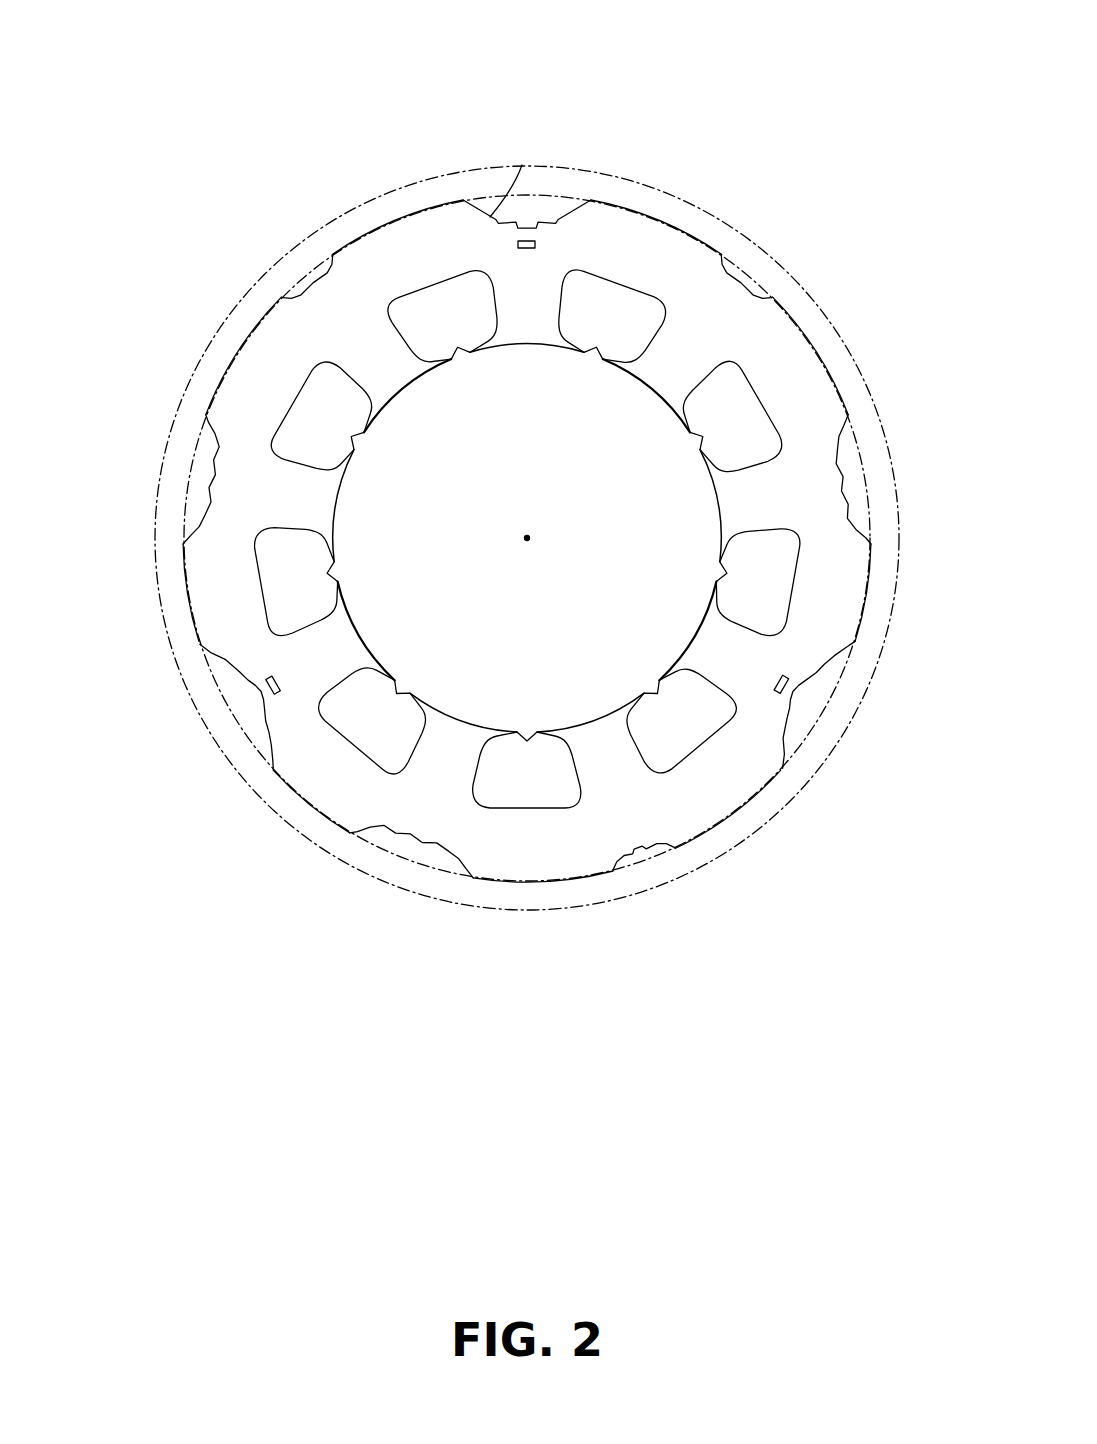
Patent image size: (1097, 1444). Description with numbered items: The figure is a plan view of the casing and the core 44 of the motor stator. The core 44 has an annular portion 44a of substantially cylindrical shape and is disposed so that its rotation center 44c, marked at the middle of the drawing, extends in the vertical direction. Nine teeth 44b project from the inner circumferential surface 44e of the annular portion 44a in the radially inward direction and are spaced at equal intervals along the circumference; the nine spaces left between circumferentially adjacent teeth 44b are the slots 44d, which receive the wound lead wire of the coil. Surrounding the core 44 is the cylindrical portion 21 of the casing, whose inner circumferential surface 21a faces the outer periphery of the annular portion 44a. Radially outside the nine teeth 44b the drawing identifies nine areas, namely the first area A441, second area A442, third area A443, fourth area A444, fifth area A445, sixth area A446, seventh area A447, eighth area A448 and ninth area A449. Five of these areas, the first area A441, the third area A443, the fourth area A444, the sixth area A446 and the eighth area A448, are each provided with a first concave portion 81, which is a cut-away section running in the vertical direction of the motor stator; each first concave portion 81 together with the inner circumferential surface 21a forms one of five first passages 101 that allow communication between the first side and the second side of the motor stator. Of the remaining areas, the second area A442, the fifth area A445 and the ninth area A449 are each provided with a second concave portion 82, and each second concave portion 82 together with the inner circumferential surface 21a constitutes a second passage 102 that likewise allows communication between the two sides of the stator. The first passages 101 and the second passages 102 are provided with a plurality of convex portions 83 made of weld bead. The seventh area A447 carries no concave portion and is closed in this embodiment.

The cylindrical portion 21 is at (663, 200).
The inner circumferential surface 21a is at (555, 213).
The core 44 is at (403, 213).
The annular portion 44a is at (186, 582).
The teeth 44b is at (727, 498).
The rotation center 44c is at (523, 540).
The slots 44d is at (527, 537).
The inner circumferential surface 44e is at (434, 413).
The first concave portion 81 is at (528, 212).
The second concave portion 82 is at (305, 272).
The convex portions 83 is at (301, 283).
The first passages 101 is at (554, 213).
The second passage 102 is at (281, 283).
The first area A441 is at (500, 185).
The second area A442 is at (728, 252).
The third area A443 is at (870, 462).
The fourth area A444 is at (846, 690).
The fifth area A445 is at (633, 873).
The sixth area A446 is at (448, 882).
The seventh area A447 is at (233, 735).
The eighth area A448 is at (180, 465).
The ninth area A449 is at (262, 278).